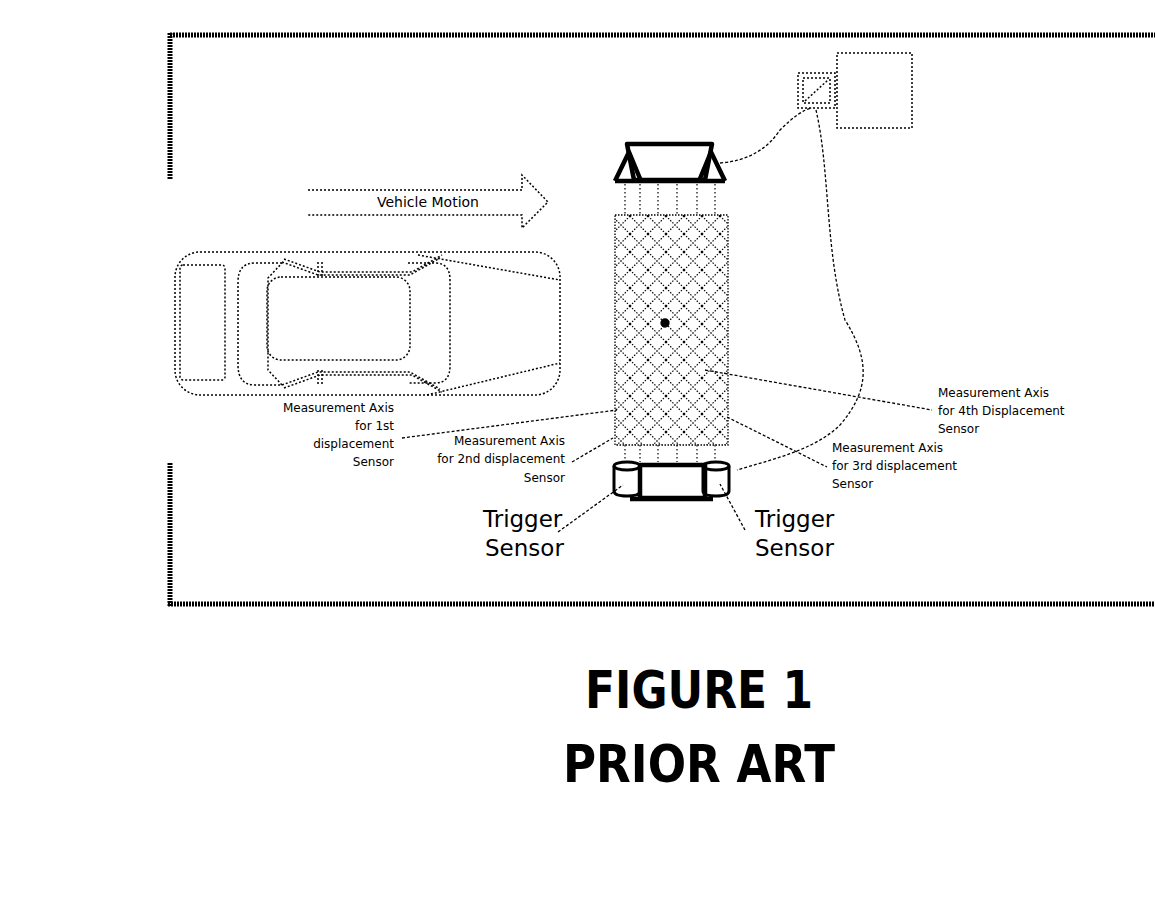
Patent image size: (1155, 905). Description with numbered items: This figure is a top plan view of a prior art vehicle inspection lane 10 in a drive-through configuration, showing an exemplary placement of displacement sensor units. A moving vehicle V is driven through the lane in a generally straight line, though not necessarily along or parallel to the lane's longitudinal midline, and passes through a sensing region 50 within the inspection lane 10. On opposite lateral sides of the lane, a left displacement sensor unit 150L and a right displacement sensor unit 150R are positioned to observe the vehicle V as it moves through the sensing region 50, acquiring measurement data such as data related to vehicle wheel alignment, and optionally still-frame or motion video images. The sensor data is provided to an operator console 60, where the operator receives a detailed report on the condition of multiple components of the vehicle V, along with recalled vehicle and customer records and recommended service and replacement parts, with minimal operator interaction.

The vehicle inspection lane 10 is at (325, 507).
The vehicle V is at (315, 325).
The sensing region 50 is at (668, 322).
The operator console 60 is at (810, 75).
The left displacement sensor unit 150L is at (662, 140).
The right displacement sensor unit 150R is at (670, 486).